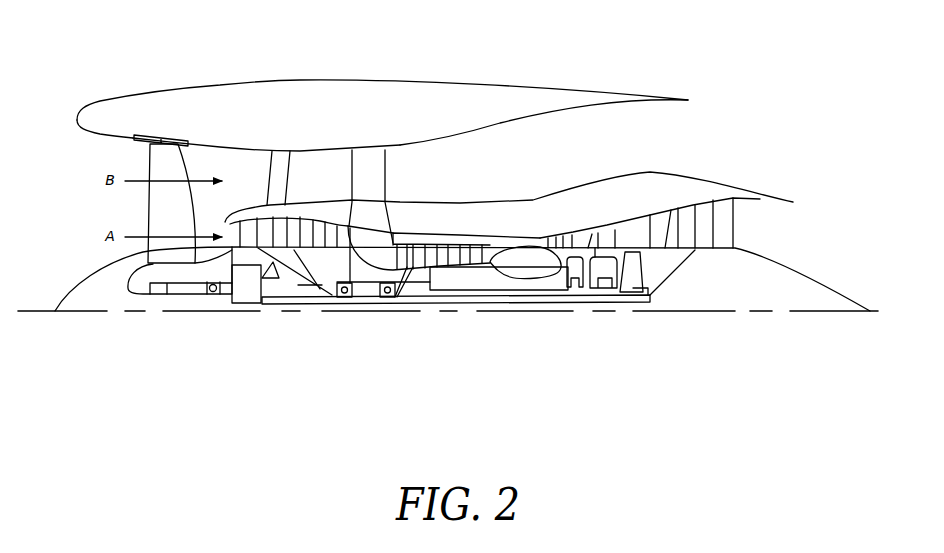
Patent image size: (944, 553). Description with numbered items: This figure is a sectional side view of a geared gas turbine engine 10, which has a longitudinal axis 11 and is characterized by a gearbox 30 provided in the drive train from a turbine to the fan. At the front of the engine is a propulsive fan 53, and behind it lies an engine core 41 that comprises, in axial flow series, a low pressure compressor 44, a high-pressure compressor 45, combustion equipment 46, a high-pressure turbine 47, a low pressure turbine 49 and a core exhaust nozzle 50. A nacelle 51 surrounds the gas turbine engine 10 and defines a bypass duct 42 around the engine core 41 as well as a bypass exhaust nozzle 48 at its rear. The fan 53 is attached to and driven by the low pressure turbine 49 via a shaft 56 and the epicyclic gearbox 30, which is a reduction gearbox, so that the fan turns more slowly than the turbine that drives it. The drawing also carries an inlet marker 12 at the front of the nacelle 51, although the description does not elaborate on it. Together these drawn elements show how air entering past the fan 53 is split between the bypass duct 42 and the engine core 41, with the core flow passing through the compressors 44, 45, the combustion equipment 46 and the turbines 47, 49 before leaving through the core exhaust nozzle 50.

The gas turbine engine 10 is at (146, 91).
The inlet 12 is at (103, 160).
The propulsive fan 53 is at (148, 205).
The low pressure compressor 44 is at (312, 226).
The nacelle 51 is at (365, 92).
The high-pressure compressor 45 is at (447, 258).
The high-pressure turbine 47 is at (573, 233).
The engine core 41 is at (495, 214).
The bypass duct 42 is at (613, 148).
The bypass exhaust nozzle 48 is at (690, 136).
The low pressure turbine 49 is at (703, 214).
The core exhaust nozzle 50 is at (767, 226).
The epicyclic gearbox 30 is at (245, 295).
The shaft 56 is at (440, 300).
The combustion equipment 46 is at (518, 256).
The longitudinal axis 11 is at (685, 312).